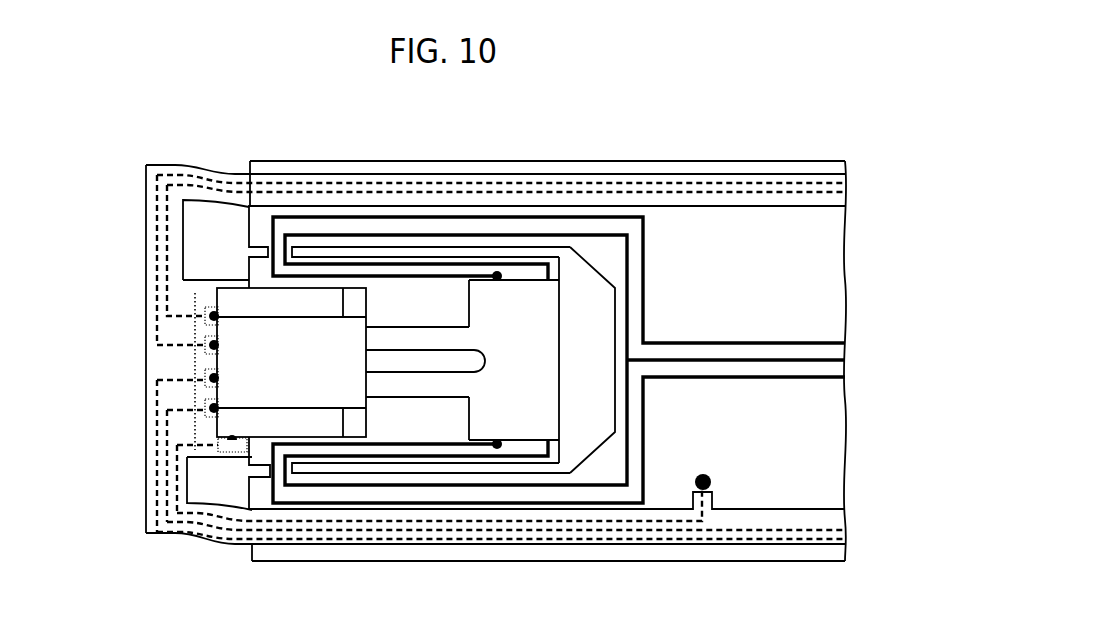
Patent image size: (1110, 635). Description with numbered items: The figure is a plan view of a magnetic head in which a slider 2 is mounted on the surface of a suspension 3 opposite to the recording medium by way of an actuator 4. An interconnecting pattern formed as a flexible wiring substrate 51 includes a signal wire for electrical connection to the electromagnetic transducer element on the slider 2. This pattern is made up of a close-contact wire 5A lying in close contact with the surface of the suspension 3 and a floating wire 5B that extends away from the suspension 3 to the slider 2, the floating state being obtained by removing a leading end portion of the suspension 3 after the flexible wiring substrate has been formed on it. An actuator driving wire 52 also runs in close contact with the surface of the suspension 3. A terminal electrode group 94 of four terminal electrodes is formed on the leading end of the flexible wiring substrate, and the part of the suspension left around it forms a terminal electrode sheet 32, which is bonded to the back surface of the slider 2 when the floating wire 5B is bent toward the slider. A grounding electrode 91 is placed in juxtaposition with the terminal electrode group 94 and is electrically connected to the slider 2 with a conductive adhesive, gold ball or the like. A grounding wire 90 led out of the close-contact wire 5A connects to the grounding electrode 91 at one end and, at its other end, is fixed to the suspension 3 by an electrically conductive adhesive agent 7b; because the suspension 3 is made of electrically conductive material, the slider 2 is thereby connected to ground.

The slider 2 is at (320, 332).
The suspension 3 is at (773, 162).
The actuator 4 is at (532, 332).
The close-contact wire 5A is at (432, 562).
The floating wire 5B is at (148, 470).
The electrically conductive adhesive agent 7b is at (711, 484).
The terminal electrode sheet 32 is at (205, 295).
The flexible wiring substrate signal wire 51 is at (298, 192).
The actuator driving wire 52 is at (758, 357).
The grounding wire 90 is at (231, 518).
The grounding electrode 91 is at (220, 443).
The terminal electrode group 94 is at (205, 320).